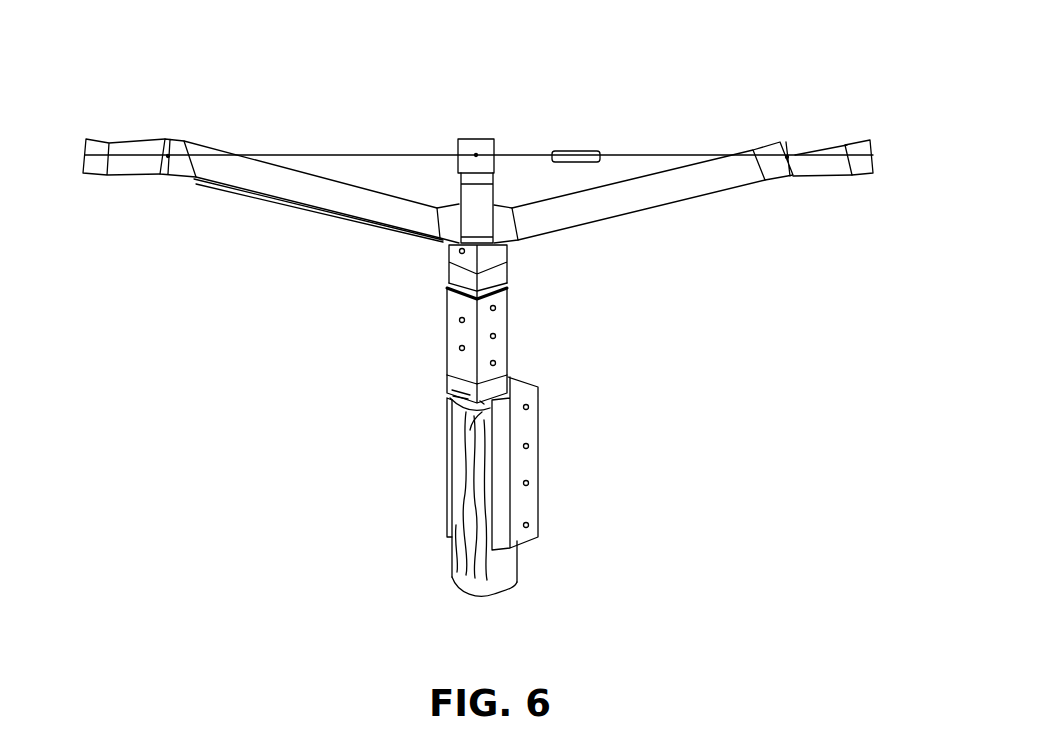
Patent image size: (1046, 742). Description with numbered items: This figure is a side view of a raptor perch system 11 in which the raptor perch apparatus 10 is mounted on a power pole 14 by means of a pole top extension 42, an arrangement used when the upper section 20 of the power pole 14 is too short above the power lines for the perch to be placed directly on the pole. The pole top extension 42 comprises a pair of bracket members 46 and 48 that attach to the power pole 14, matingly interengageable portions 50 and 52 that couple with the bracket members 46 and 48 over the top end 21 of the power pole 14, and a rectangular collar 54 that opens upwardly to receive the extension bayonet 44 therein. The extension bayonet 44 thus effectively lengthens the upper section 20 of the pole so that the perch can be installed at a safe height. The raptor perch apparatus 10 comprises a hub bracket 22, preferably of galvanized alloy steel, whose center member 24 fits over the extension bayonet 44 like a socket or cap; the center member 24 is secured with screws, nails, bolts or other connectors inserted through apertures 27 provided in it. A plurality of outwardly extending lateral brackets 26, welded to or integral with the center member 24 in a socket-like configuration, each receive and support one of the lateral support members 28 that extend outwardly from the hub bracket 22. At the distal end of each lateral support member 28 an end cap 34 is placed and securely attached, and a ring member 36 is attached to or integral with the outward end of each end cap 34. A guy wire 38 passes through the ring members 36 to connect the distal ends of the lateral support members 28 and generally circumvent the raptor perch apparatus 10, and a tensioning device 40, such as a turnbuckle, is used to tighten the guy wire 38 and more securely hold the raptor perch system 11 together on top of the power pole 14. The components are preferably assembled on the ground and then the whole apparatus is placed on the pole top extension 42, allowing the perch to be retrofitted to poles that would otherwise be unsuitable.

The raptor perch apparatus 10 is at (200, 204).
The raptor perch system 11 is at (680, 82).
The power pole 14 is at (456, 558).
The upper section 20 is at (555, 557).
The top end 21 is at (466, 428).
The hub bracket 22 is at (520, 247).
The center member 24 is at (505, 262).
The lateral brackets 26 is at (447, 238).
The apertures 27 is at (458, 254).
The lateral support members 28 is at (625, 200).
The end cap 34 is at (770, 148).
The ring member 36 is at (873, 156).
The guy wire 38 is at (538, 155).
The tensioning device 40 is at (594, 151).
The pole top extension 42 is at (615, 328).
The extension bayonet 44 is at (503, 278).
The bracket member 46 is at (531, 460).
The bracket member 48 is at (447, 470).
The matingly interengageable portion 50 is at (517, 384).
The matingly interengageable portion 52 is at (456, 388).
The rectangular collar 54 is at (458, 333).